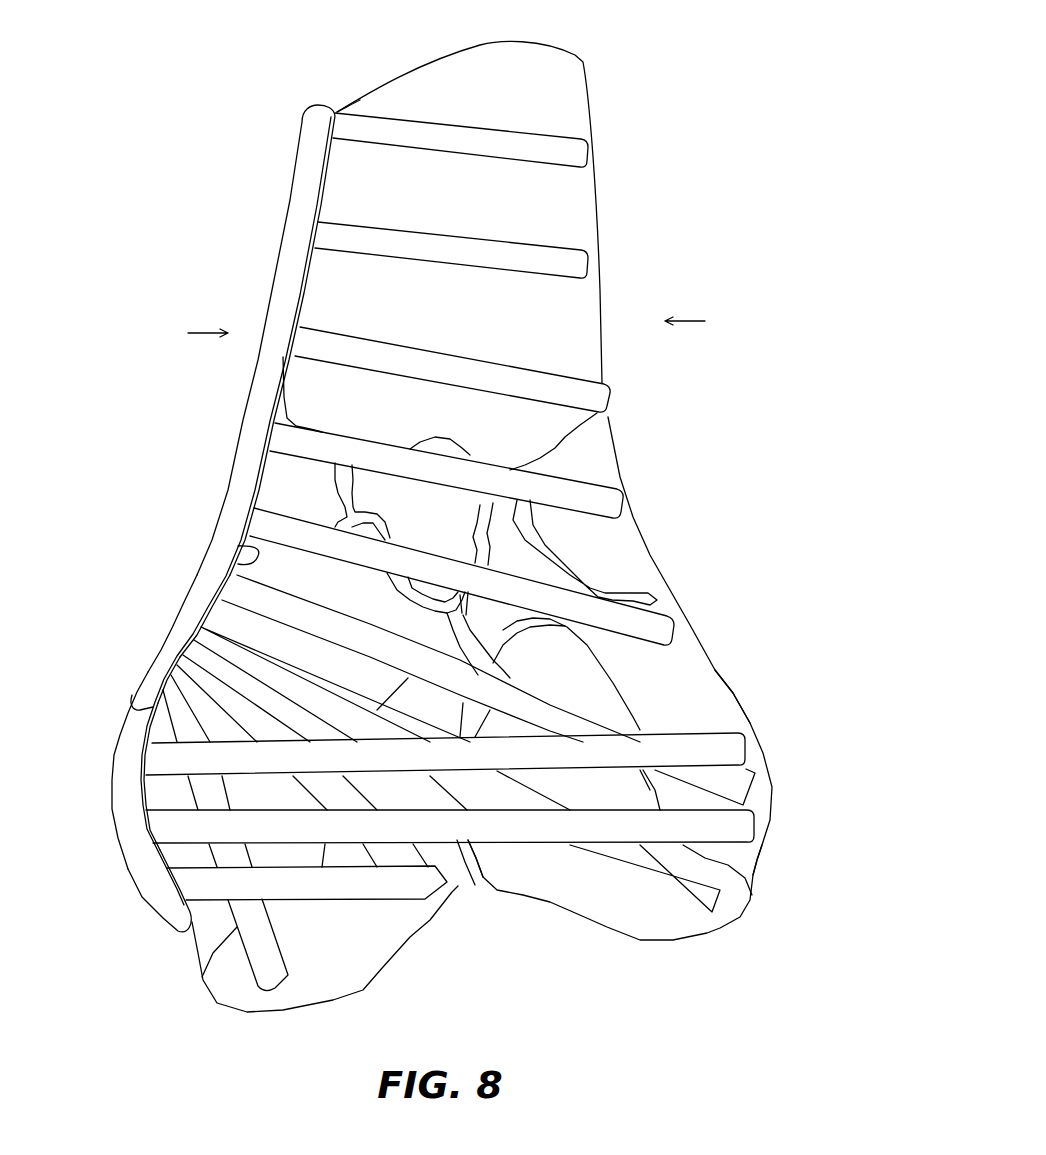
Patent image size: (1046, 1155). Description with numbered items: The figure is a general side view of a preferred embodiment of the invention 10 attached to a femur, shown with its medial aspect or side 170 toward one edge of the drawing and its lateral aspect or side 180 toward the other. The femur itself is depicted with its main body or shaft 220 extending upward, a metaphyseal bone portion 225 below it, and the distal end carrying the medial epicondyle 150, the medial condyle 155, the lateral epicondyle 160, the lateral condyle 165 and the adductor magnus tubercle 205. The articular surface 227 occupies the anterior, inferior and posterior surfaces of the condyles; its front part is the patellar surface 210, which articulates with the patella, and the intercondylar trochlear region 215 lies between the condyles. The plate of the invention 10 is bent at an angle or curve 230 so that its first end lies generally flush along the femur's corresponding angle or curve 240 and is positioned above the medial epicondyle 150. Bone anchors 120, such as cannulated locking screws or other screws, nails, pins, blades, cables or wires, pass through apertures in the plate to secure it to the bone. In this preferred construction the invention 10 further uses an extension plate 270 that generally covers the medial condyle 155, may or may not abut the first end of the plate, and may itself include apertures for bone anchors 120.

The invention 10 is at (680, 46).
The bone anchors 120 is at (582, 152).
The medial epicondyle 150 is at (140, 782).
The medial condyle 155 is at (145, 832).
The lateral epicondyle 160 is at (735, 693).
The lateral condyle 165 is at (735, 860).
The medial aspect or side 170 is at (176, 347).
The lateral aspect or side 180 is at (719, 335).
The adductor magnus tubercle 205 is at (183, 670).
The patellar surface 210 is at (517, 626).
The intercondylar trochlear region 215 is at (375, 908).
The main body or shaft 220 is at (410, 82).
The metaphyseal bone portion 225 is at (258, 480).
The articular surface 227 is at (517, 786).
The angle or curve 230 is at (192, 585).
The angle or curve 240 is at (244, 560).
The extension plate 270 is at (163, 905).